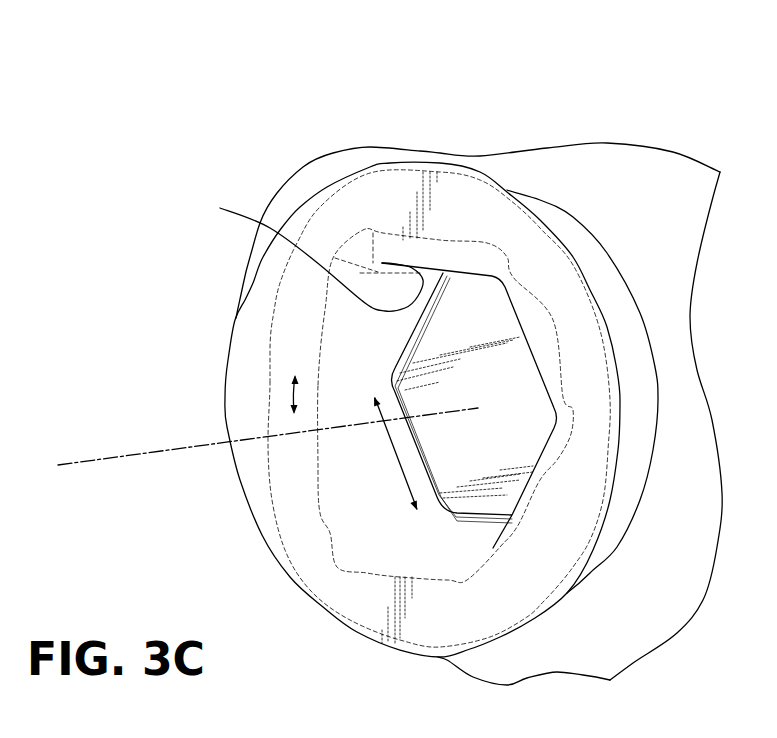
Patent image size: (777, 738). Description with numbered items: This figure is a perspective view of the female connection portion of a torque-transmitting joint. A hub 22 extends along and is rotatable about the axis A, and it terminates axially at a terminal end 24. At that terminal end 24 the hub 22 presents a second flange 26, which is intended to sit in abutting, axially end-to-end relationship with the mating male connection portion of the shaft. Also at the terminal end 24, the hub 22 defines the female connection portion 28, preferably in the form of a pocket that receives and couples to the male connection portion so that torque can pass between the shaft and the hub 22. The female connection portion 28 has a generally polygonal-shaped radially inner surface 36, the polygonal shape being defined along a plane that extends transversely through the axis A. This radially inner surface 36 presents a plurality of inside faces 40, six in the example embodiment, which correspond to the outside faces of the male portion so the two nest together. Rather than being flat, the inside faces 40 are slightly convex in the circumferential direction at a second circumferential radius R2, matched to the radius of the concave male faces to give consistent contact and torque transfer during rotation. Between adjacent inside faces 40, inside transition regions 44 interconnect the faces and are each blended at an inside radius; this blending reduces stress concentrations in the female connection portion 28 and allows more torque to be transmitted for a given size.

The hub 22 is at (387, 110).
The terminal end 24 is at (267, 327).
The second flange 26 is at (450, 185).
The female connection portion 28 is at (385, 505).
The radially inner surface 36 is at (377, 473).
The inside faces 40 is at (380, 328).
The inside transition regions 44 is at (294, 391).
The second circumferential radius R2 is at (407, 477).
The axis A is at (95, 463).